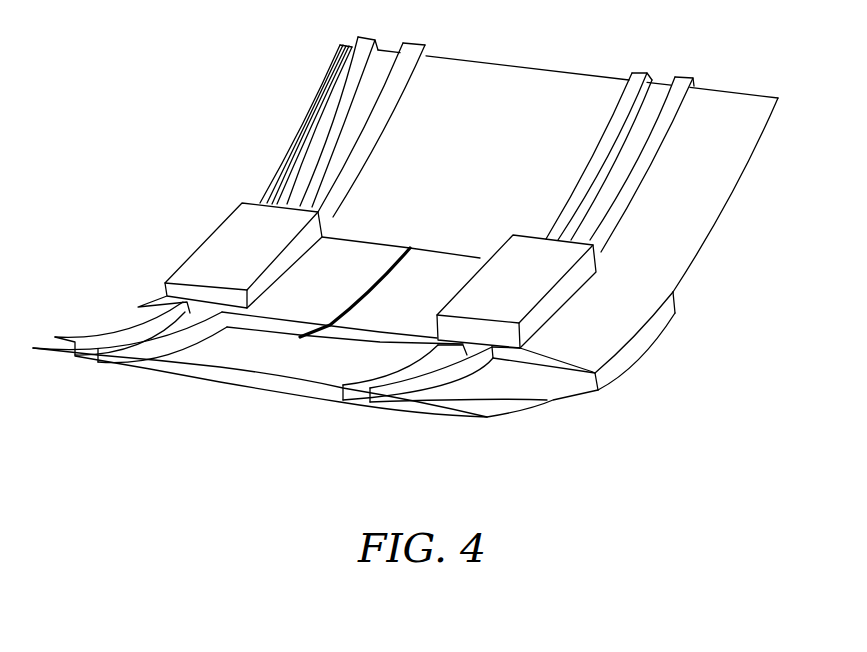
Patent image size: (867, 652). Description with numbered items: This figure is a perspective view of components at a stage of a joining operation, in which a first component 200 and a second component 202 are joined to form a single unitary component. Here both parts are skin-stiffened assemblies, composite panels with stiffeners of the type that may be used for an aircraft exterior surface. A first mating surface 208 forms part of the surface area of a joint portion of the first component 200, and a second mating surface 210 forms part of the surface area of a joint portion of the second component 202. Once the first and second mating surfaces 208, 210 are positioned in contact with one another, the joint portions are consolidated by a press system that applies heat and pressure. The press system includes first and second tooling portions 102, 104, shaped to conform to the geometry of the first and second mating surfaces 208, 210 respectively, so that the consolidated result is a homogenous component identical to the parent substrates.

The first tooling portion 102 is at (230, 227).
The second tooling portion 104 is at (610, 367).
The first component 200 is at (553, 400).
The second component 202 is at (697, 270).
The first mating surface 208 is at (317, 308).
The second mating surface 210 is at (452, 272).